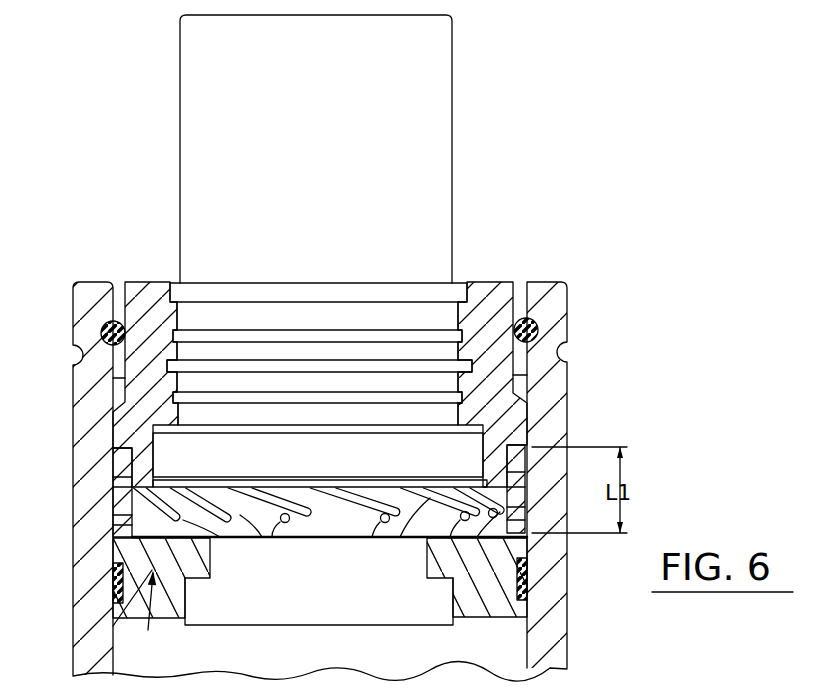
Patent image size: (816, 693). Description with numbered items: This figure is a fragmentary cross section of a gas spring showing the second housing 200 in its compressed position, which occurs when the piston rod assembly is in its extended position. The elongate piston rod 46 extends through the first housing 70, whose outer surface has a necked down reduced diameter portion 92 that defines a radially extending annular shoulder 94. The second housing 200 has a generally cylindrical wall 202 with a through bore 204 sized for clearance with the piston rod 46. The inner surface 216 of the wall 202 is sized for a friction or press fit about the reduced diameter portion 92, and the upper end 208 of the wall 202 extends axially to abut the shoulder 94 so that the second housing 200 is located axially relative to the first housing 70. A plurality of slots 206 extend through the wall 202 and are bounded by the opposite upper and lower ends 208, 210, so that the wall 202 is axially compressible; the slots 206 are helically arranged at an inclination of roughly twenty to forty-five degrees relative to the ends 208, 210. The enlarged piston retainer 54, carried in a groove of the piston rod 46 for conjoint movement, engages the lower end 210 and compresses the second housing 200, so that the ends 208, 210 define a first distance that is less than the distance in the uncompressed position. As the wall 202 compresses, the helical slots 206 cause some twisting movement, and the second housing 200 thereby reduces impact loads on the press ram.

The piston rod 46 is at (452, 158).
The first housing 70 is at (520, 360).
The upper end of the wall 208 is at (121, 447).
The inner surface of the wall 216 is at (148, 452).
The reduced diameter portion 92 is at (133, 485).
The annular shoulder 94 is at (148, 453).
The slots 206 is at (222, 540).
The cylindrical wall 202 is at (147, 535).
The piston retainer 54 is at (167, 598).
The through bore 204 is at (507, 612).
The second housing 200 is at (113, 626).
The lower end of the wall 210 is at (152, 616).